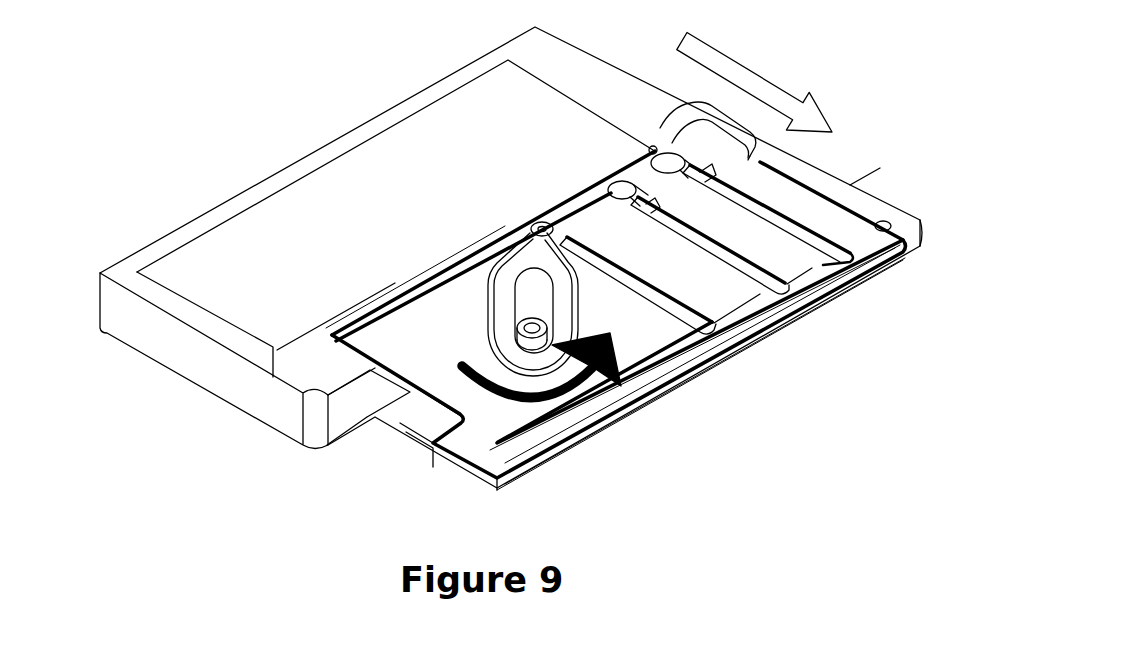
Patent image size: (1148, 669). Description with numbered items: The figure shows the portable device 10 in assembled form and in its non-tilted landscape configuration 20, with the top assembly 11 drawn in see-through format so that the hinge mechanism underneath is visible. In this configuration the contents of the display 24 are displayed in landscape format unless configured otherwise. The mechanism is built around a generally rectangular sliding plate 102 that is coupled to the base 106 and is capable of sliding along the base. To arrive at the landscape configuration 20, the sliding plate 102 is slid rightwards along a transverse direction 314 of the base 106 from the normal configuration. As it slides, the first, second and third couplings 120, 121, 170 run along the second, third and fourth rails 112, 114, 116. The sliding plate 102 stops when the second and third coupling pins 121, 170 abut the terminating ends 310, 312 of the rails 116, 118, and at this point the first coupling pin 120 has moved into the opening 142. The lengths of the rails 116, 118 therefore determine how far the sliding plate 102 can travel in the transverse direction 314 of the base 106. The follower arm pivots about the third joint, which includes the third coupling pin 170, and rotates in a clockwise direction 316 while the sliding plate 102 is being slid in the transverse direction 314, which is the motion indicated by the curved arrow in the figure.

The portable device 10 is at (176, 381).
The top assembly 11 is at (863, 184).
The landscape configuration 20 is at (756, 394).
The display 24 is at (384, 393).
The sliding plate 102 is at (588, 431).
The base 106 is at (151, 338).
The second rail 112 is at (811, 279).
The third rail 114 is at (784, 231).
The fourth rail 116 is at (776, 296).
The fourth rail 118 is at (731, 350).
The first coupling pin 120 is at (651, 163).
The second coupling pin 121 is at (622, 193).
The opening 142 is at (649, 148).
The third coupling pin 170 is at (556, 229).
The terminating end 310 is at (583, 178).
The terminating end 312 is at (530, 229).
The transverse direction 314 is at (755, 83).
The clockwise direction 316 is at (624, 386).